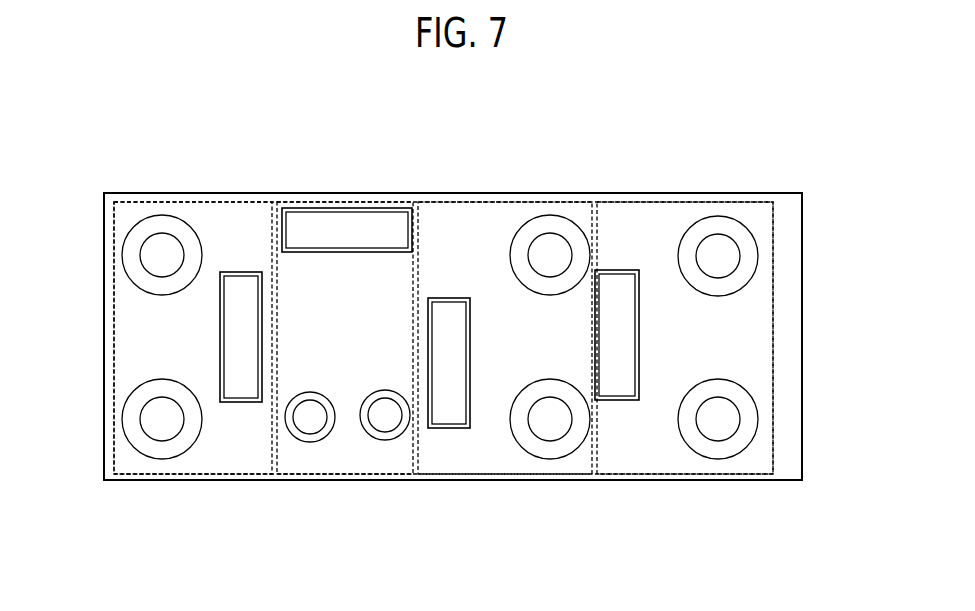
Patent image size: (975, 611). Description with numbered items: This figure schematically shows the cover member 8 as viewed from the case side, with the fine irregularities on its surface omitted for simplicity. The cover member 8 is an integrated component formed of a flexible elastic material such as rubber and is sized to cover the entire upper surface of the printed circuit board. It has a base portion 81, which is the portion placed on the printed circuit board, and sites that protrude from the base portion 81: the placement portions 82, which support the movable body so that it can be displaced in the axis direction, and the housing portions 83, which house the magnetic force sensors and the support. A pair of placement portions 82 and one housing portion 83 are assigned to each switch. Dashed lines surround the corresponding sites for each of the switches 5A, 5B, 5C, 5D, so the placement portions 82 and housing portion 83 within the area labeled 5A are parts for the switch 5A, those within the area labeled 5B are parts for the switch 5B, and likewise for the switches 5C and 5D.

The cover member 8 is at (786, 192).
The base portion 81 is at (457, 206).
The placement portion 82 is at (126, 281).
The housing portion 83 is at (366, 206).
The switch 5A is at (143, 200).
The switch 5B is at (306, 200).
The switch 5C is at (567, 202).
The switch 5D is at (645, 202).